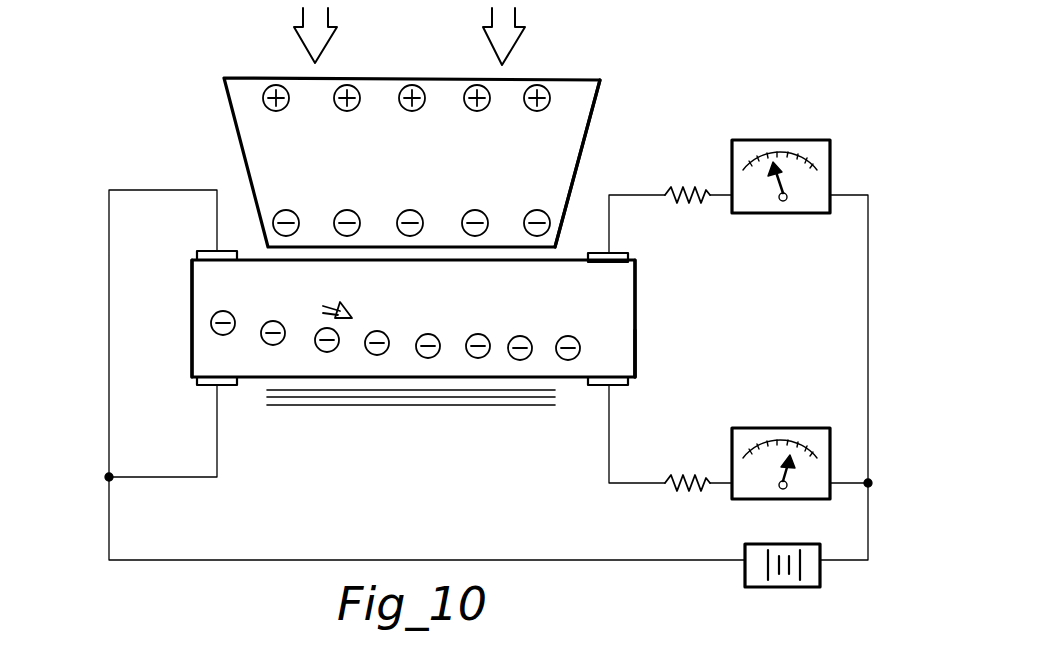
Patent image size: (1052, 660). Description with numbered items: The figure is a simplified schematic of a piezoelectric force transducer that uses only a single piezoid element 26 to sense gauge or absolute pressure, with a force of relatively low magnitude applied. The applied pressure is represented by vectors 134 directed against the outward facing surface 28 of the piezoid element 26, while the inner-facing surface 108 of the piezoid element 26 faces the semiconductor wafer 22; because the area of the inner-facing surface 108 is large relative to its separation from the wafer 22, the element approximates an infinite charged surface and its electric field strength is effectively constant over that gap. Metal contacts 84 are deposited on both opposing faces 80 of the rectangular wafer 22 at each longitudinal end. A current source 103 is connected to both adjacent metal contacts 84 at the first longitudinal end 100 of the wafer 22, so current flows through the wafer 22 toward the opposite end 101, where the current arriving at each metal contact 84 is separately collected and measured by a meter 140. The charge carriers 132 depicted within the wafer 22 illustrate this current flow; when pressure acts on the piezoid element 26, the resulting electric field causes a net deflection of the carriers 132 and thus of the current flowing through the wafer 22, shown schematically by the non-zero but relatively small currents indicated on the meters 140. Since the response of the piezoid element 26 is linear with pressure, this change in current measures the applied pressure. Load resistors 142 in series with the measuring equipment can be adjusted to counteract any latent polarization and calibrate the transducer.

The semiconductor wafer 22 is at (200, 325).
The piezoid element 26 is at (588, 124).
The outward facing surface 28 is at (522, 84).
The opposing faces 80 is at (588, 377).
The metal contacts 84 is at (213, 252).
The first longitudinal end 100 is at (194, 348).
The opposite end 101 is at (635, 343).
The current source 103 is at (783, 588).
The inner-facing surface 108 is at (430, 247).
The trapped charge carriers 132 is at (423, 355).
The vectors 134 is at (298, 28).
The meter 140 is at (762, 140).
The load resistors 142 is at (683, 190).